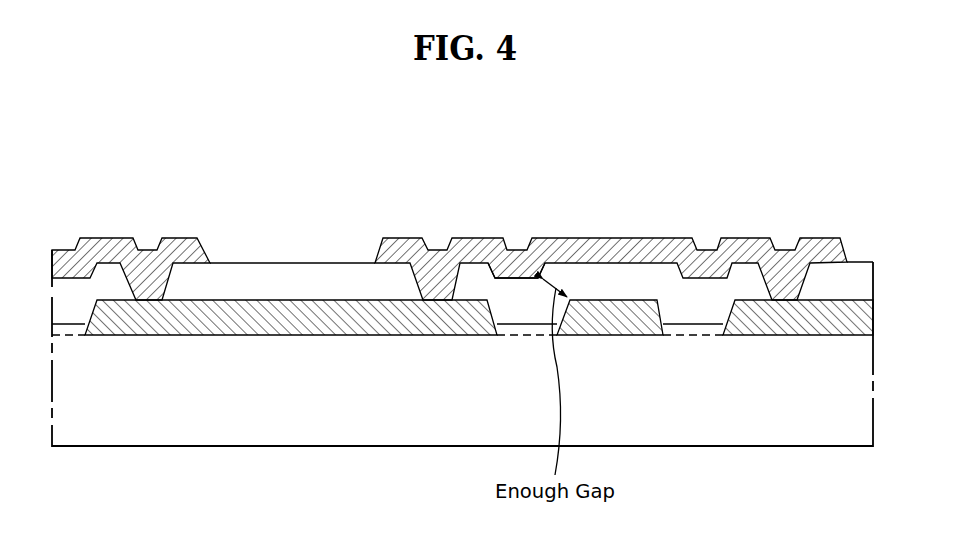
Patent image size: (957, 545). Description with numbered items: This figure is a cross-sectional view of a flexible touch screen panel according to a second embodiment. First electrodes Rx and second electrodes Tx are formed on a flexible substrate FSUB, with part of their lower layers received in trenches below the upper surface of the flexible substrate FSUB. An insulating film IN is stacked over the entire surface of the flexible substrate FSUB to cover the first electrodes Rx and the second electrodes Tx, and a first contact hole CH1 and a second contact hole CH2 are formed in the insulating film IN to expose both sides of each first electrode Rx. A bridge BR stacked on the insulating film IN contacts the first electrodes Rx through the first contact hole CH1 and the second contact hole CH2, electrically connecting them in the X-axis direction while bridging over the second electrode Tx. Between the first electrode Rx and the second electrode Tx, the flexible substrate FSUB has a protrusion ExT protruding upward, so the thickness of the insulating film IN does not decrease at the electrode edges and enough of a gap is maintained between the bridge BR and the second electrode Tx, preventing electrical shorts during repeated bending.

The flexible substrate FSUB is at (107, 428).
The first electrode Rx is at (312, 322).
The second electrode Tx is at (645, 332).
The protrusion ExT is at (693, 330).
The insulating film IN is at (273, 270).
The first contact hole CH1 is at (148, 229).
The second contact hole CH2 is at (437, 229).
The bridge BR is at (552, 246).